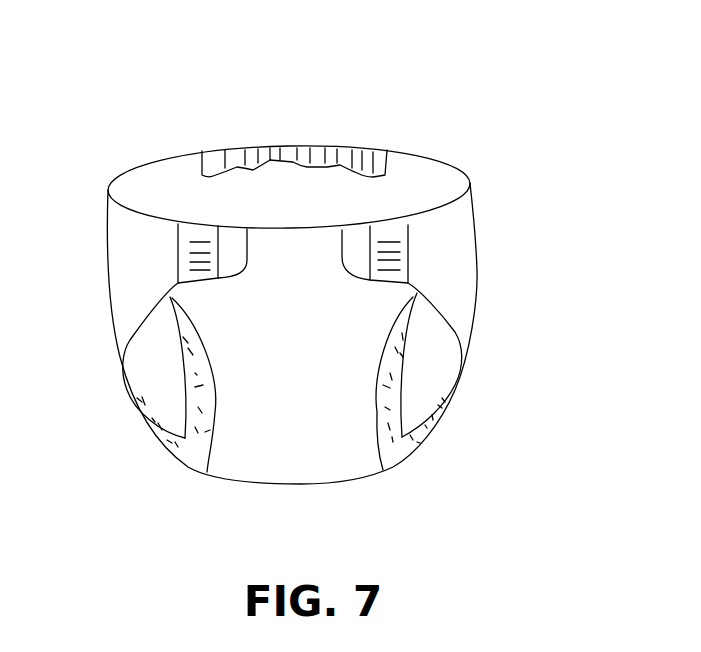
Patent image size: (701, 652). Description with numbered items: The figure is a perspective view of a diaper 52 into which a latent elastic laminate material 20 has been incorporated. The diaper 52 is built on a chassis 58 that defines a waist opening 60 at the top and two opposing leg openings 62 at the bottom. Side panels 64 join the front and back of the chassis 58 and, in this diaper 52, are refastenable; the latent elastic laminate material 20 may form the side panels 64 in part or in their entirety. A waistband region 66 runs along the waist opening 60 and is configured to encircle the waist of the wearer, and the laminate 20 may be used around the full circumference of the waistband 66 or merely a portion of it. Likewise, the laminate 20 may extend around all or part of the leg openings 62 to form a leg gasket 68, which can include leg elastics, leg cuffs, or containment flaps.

The diaper 52 is at (443, 83).
The chassis 58 is at (240, 457).
The waist opening 60 is at (418, 192).
The leg openings 62 is at (158, 365).
The side panels 64 is at (200, 236).
The waistband region 66 is at (287, 148).
The leg gasket 68 is at (157, 433).
The latent elastic laminate material 20 is at (229, 147).